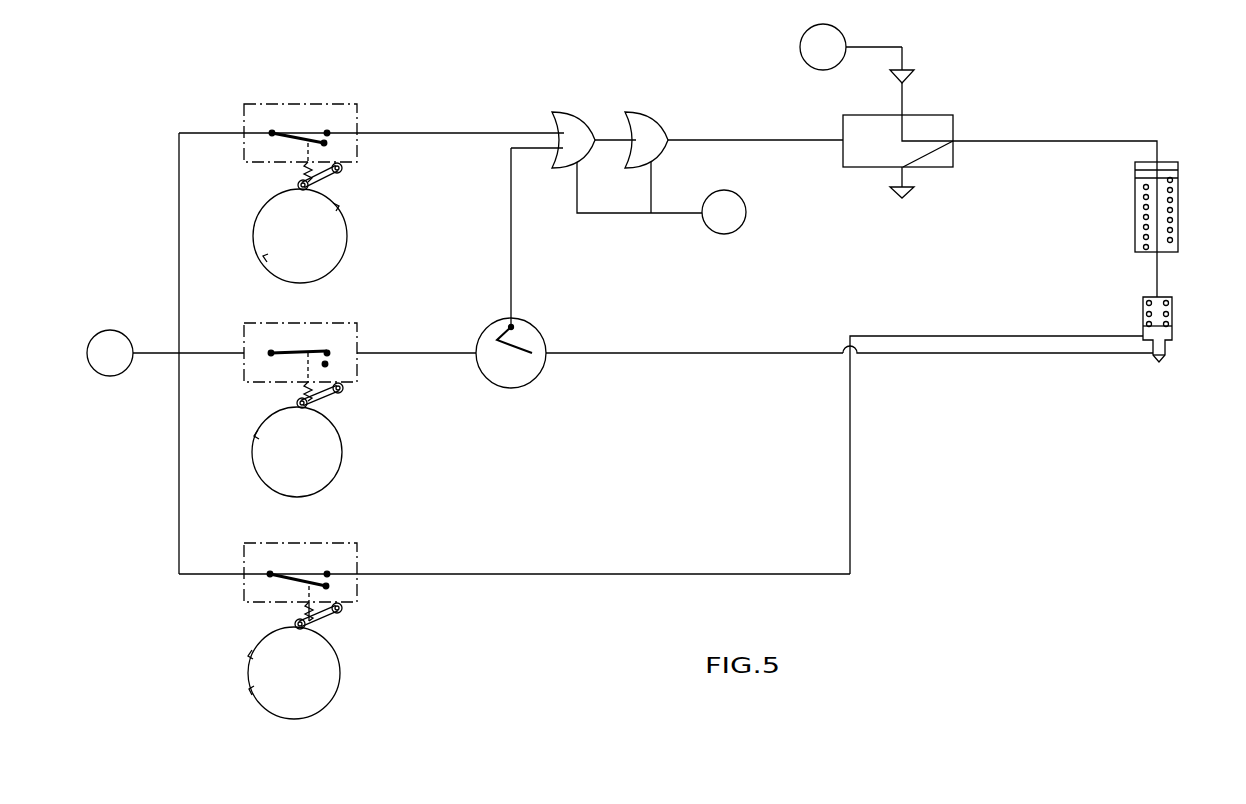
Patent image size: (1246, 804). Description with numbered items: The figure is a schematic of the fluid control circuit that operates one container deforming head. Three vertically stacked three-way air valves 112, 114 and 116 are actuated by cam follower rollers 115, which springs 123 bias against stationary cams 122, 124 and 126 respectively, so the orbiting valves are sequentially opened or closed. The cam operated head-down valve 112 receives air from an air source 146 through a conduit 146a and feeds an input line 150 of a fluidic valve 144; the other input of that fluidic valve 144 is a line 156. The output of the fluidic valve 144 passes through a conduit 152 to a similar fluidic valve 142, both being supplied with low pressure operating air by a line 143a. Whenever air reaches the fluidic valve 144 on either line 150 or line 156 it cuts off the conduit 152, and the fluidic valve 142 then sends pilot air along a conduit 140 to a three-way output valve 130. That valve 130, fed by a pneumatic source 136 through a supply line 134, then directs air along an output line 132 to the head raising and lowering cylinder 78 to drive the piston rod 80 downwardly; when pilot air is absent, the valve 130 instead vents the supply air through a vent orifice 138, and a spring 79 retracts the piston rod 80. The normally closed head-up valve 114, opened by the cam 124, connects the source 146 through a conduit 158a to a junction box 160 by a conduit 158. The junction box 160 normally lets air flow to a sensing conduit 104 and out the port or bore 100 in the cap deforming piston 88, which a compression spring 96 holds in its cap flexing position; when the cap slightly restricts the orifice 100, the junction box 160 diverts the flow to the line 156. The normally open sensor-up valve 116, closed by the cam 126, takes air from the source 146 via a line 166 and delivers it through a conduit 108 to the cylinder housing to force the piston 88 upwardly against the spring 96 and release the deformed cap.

The head raising and lowering cylinder 78 is at (1178, 200).
The spring 79 is at (1172, 222).
The piston rod 80 is at (1157, 283).
The cap deforming piston 88 is at (1172, 326).
The compression spring 96 is at (1172, 306).
The bore 100 is at (1158, 362).
The air conducting conduit 104 is at (1072, 354).
The air conducting conduit 108 is at (1083, 336).
The head-down valve 112 is at (287, 108).
The head-up valve 114 is at (280, 325).
The cam follower roller 115 is at (296, 185).
The sensor-up valve 116 is at (267, 550).
The cam 122 is at (345, 237).
The spring 123 is at (304, 612).
The cam 124 is at (343, 452).
The cam 126 is at (340, 675).
The three-way output valve 130 is at (930, 167).
The output line 132 is at (1095, 140).
The supply line 134 is at (900, 98).
The pneumatic source 136 is at (800, 47).
The vent orifice 138 is at (890, 192).
The conduit 140 is at (748, 140).
The fluidic valve 142 is at (655, 118).
The line 143a is at (617, 213).
The fluidic valve 144 is at (560, 118).
The air source 146 is at (128, 372).
The conduit 146a is at (179, 285).
The input line 150 is at (437, 133).
The conduit 152 is at (600, 138).
The input line 156 is at (511, 253).
The conduit 158 is at (430, 353).
The conduit 158a is at (210, 353).
The junction box 160 is at (527, 378).
The line 166 is at (179, 542).